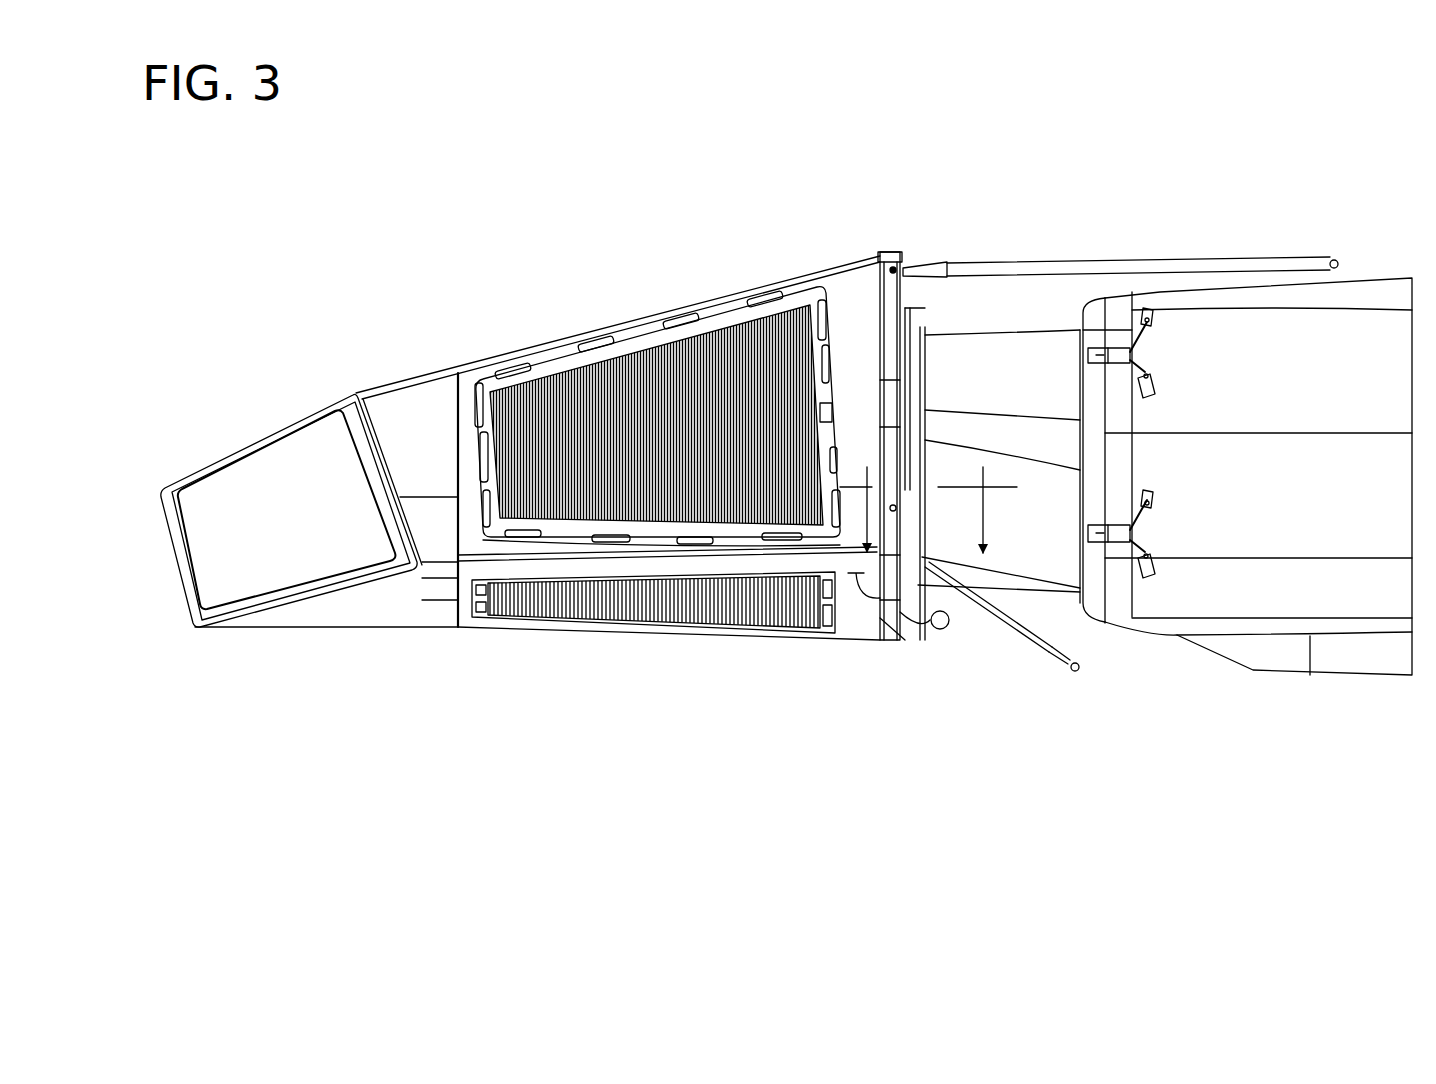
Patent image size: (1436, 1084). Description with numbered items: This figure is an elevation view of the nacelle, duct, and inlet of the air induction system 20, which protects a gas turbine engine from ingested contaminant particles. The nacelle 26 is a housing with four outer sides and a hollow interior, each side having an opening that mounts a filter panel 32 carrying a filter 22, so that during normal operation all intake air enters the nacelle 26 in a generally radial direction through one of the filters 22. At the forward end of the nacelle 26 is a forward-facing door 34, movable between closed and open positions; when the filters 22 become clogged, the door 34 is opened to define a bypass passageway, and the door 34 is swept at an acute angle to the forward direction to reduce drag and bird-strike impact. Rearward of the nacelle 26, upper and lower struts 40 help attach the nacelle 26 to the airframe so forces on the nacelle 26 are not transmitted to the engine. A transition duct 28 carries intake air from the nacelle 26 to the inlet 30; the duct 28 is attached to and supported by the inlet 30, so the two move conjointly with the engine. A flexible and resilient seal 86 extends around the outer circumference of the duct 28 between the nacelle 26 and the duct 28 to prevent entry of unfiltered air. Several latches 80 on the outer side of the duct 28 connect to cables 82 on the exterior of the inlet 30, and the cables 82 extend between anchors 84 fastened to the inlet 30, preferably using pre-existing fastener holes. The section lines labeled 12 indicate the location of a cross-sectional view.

The section line 12- 12 is at (928, 505).
The air induction system 20 is at (768, 668).
The filter 22 is at (552, 403).
The nacelle 26 is at (643, 318).
The transition duct 28 is at (988, 330).
The inlet 30 is at (1150, 293).
The filter panel 32 is at (480, 422).
The forward-facing door 34 is at (290, 452).
The strut 40 is at (1055, 260).
The latch 80 is at (1108, 528).
The cable 82 is at (1130, 360).
The anchor 84 is at (1152, 312).
The seal 86 is at (925, 325).